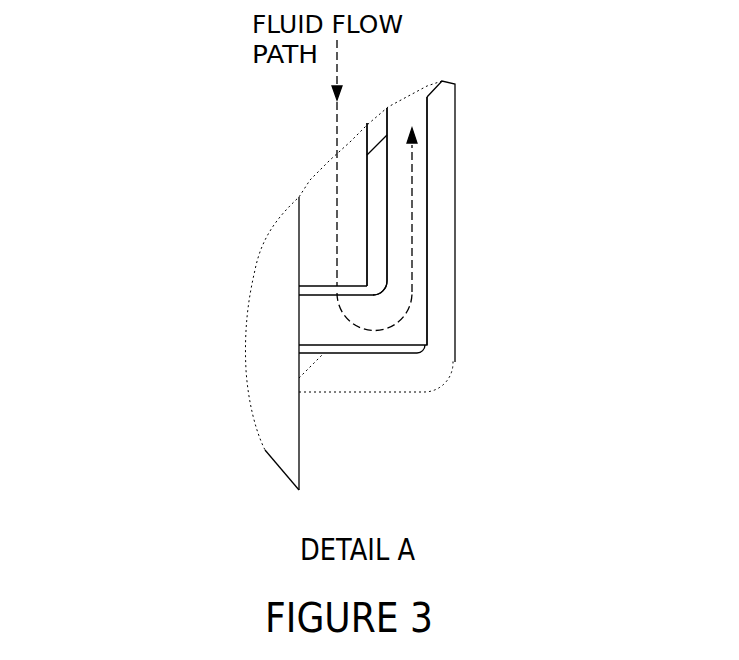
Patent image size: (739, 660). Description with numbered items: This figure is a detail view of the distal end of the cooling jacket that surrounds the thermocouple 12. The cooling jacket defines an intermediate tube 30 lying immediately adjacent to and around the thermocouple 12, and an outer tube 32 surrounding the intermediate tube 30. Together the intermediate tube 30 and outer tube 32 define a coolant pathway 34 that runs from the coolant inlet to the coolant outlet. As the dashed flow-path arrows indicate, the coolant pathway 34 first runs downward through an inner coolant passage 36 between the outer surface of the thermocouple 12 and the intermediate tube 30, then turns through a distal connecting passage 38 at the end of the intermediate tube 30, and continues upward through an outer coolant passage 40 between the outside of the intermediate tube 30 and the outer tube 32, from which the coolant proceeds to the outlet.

The thermocouple 12 is at (278, 293).
The intermediate tube 30 is at (379, 271).
The outer tube 32 is at (427, 250).
The coolant pathway 34 is at (336, 177).
The inner coolant passage 36 is at (318, 225).
The distal connecting passage 38 is at (381, 314).
The outer coolant passage 40 is at (400, 183).